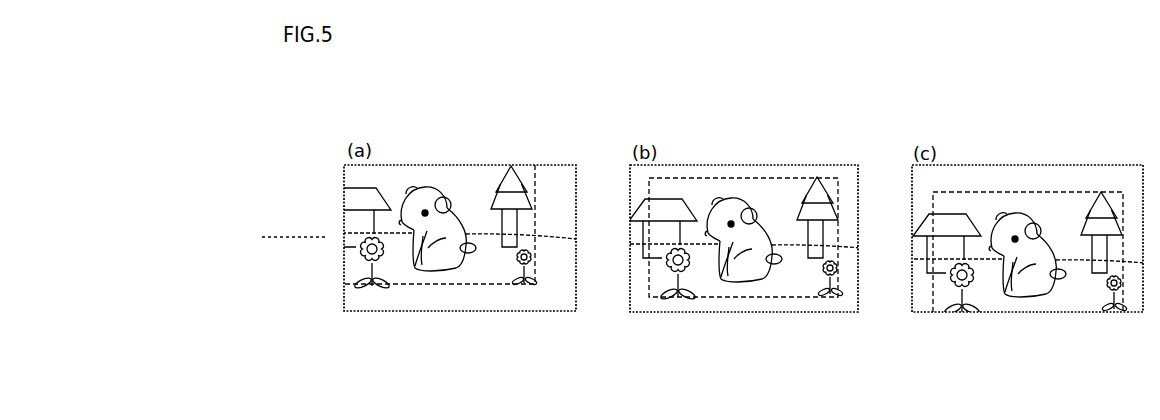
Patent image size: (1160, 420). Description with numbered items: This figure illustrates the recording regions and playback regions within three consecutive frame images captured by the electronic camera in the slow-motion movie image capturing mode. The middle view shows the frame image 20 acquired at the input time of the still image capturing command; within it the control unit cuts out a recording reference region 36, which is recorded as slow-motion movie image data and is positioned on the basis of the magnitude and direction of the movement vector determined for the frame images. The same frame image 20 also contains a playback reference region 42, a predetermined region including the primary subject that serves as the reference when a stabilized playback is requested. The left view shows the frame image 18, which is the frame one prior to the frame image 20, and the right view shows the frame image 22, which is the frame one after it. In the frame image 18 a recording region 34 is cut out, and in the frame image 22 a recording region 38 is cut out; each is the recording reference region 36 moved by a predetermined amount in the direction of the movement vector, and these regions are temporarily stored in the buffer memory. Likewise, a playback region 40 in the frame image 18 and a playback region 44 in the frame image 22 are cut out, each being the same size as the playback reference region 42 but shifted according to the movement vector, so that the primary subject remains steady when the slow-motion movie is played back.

The frame image 18 is at (553, 165).
The frame image 20 is at (835, 165).
The frame image 22 is at (1120, 165).
The recording region 34 is at (439, 258).
The playback region 40 is at (408, 284).
The recording reference region 36 is at (743, 269).
The playback reference region 42 is at (707, 297).
The recording region 38 is at (1028, 222).
The playback region 44 is at (1023, 191).